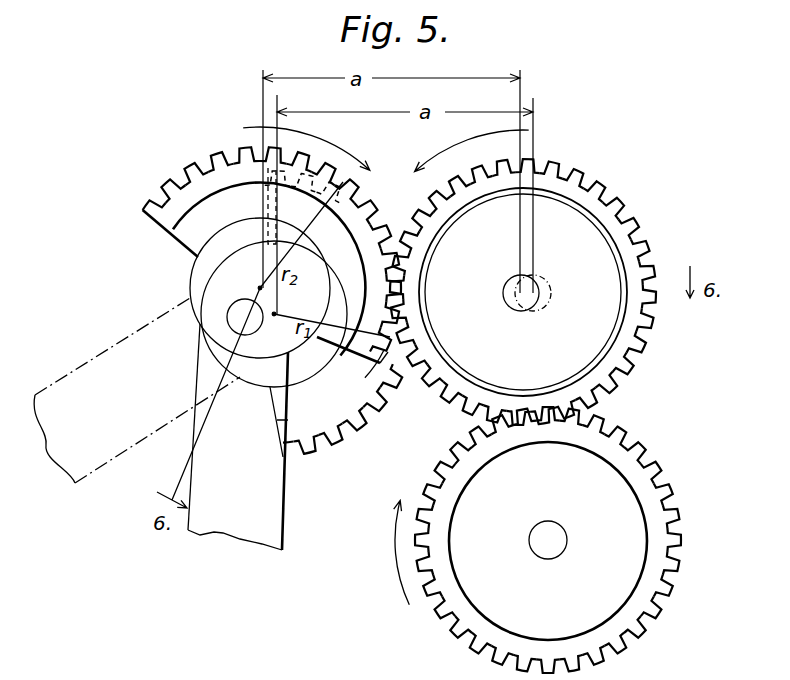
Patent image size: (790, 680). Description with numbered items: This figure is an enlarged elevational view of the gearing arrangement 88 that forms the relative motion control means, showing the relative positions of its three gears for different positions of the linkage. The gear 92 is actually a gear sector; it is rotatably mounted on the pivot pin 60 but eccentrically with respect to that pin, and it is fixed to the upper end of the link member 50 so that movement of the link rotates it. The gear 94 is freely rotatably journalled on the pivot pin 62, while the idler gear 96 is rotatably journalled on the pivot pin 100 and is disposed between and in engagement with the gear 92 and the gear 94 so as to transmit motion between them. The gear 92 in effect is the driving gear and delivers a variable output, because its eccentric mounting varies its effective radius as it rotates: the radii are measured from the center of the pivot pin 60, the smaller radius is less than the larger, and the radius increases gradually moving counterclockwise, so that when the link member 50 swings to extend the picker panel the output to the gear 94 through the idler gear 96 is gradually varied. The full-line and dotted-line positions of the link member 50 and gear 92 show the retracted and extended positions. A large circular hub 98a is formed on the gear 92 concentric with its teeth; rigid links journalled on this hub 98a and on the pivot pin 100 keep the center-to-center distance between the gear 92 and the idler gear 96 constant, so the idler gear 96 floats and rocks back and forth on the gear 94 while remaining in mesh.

The link member 50 is at (223, 533).
The pivot pin 60 is at (700, 287).
The pivot pin 62 is at (556, 552).
The gearing arrangement 88 is at (592, 152).
The gear sector 92 is at (192, 165).
The gear 94 is at (655, 530).
The idler gear 96 is at (630, 213).
The hub 98a is at (190, 264).
The pivot pin 100 is at (511, 313).